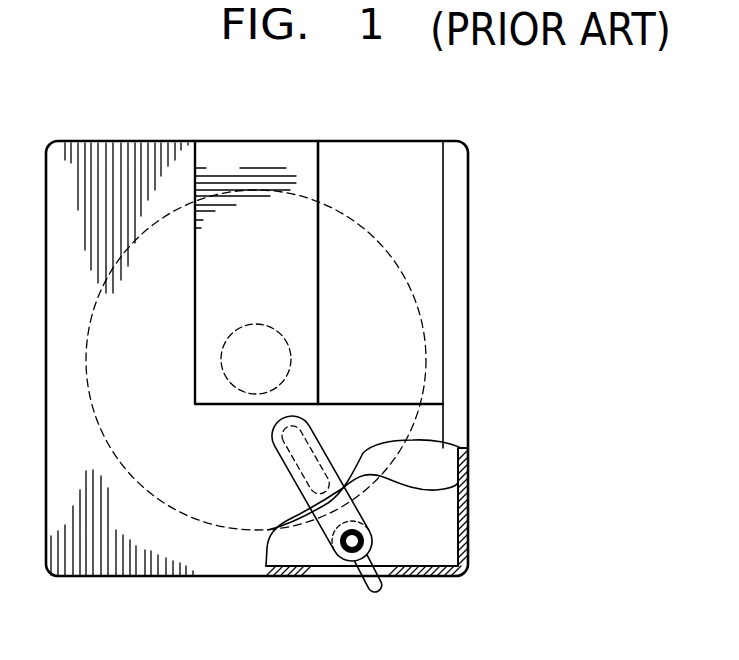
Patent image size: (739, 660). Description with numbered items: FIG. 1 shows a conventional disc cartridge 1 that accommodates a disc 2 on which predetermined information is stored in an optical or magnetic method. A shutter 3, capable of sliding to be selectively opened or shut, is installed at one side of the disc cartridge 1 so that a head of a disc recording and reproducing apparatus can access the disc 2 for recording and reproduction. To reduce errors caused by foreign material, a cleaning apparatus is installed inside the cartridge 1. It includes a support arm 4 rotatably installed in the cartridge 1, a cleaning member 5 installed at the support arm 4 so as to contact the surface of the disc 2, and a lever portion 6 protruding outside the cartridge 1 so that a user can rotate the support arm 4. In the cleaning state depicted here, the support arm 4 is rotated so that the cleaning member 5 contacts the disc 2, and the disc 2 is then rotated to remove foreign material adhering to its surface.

The disc cartridge 1 is at (94, 131).
The disc 2 is at (385, 268).
The shutter 3 is at (256, 155).
The support arm 4 is at (355, 503).
The cleaning member 5 is at (470, 471).
The lever portion 6 is at (373, 590).